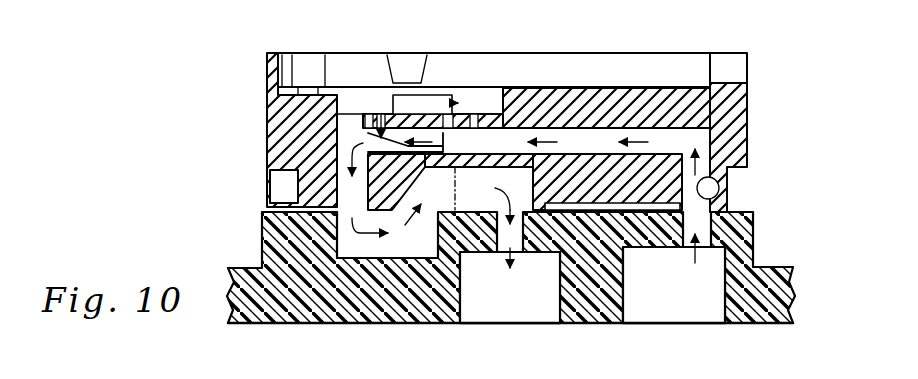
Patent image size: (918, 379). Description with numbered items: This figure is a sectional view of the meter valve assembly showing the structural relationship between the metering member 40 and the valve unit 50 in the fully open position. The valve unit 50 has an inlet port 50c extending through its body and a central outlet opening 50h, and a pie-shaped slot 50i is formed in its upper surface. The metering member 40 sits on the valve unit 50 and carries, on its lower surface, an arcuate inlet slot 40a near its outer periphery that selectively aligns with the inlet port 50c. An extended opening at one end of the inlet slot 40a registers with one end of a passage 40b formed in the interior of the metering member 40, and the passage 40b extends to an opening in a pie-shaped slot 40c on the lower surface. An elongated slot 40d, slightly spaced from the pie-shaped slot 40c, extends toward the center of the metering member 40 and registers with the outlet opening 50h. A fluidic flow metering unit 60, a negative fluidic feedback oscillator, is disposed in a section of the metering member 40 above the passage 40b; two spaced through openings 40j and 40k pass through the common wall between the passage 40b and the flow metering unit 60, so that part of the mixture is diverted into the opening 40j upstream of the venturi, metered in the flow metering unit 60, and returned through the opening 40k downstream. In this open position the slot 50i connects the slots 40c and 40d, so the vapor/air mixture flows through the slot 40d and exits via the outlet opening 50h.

The metering member 40 is at (258, 42).
The inlet slot 40a is at (719, 187).
The passage 40b is at (635, 129).
The pie-shaped slot 40c is at (345, 152).
The elongated slot 40d is at (467, 212).
The through opening 40j is at (460, 106).
The through opening 40k is at (385, 112).
The valve unit 50 is at (245, 262).
The inlet port 50c is at (674, 278).
The outlet opening 50h is at (510, 266).
The pie-shaped slot 50i is at (377, 258).
The fluidic flow metering unit 60 is at (437, 97).